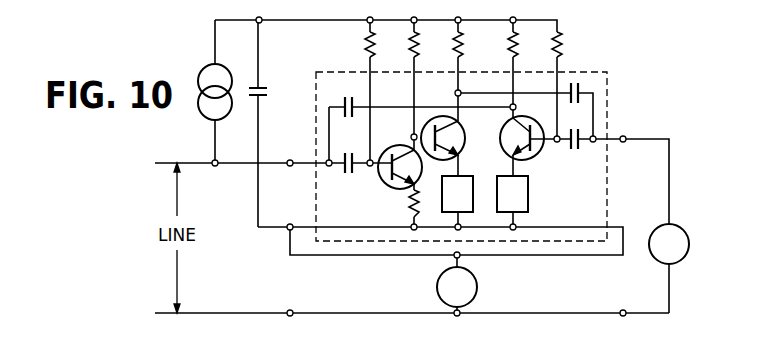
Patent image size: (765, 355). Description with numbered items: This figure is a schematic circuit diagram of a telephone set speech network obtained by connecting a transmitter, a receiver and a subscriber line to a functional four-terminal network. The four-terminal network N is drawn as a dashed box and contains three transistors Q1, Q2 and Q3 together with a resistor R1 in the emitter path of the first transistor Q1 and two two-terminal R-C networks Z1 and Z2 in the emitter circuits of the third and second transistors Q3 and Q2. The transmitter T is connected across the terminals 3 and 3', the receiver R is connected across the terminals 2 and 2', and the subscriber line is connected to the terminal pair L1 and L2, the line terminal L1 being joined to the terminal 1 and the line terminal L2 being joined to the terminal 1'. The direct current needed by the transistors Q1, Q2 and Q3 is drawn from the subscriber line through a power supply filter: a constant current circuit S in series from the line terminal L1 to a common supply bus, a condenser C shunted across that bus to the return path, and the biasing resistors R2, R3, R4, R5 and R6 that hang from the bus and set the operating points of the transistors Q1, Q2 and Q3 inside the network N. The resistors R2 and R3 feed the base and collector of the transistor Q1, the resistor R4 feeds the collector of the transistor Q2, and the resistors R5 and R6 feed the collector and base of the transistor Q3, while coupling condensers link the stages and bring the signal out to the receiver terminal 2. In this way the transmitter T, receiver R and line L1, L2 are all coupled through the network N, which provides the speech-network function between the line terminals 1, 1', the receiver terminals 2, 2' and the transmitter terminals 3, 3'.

The constant current circuit S is at (231, 91).
The condenser C is at (272, 108).
The four-terminal network N is at (608, 106).
The resistor R1 is at (409, 202).
The biasing resistor R2 is at (386, 52).
The biasing resistor R3 is at (430, 52).
The biasing resistor R4 is at (474, 52).
The biasing resistor R5 is at (529, 52).
The biasing resistor R6 is at (573, 52).
The transistor Q1 is at (386, 150).
The transistor Q2 is at (465, 145).
The transistor Q3 is at (536, 154).
The two-terminal R-C network Z1 is at (512, 191).
The two-terminal R-C network Z2 is at (457, 191).
The transmitter T is at (457, 284).
The receiver R is at (669, 268).
The terminal 1 is at (292, 150).
The terminal 1' is at (292, 327).
The terminal 2 is at (627, 129).
The terminal 2' is at (626, 328).
The terminal 3 is at (469, 265).
The terminal 3' is at (458, 327).
The line terminal L1 is at (166, 158).
The line terminal L2 is at (182, 329).